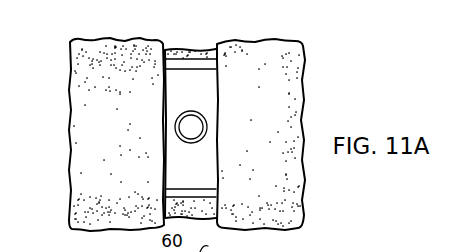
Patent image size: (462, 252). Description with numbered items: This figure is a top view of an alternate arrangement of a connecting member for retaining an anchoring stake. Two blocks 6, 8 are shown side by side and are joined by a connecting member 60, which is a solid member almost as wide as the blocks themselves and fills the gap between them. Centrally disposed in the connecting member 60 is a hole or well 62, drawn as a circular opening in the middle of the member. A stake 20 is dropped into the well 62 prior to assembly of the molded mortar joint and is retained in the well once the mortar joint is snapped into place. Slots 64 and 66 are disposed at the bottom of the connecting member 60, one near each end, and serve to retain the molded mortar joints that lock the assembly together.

The block 6 is at (121, 148).
The block 8 is at (267, 145).
The stake 20 is at (204, 118).
The connecting member 60 is at (198, 98).
The well 62 is at (200, 142).
The slot 64 is at (218, 67).
The slot 66 is at (217, 192).